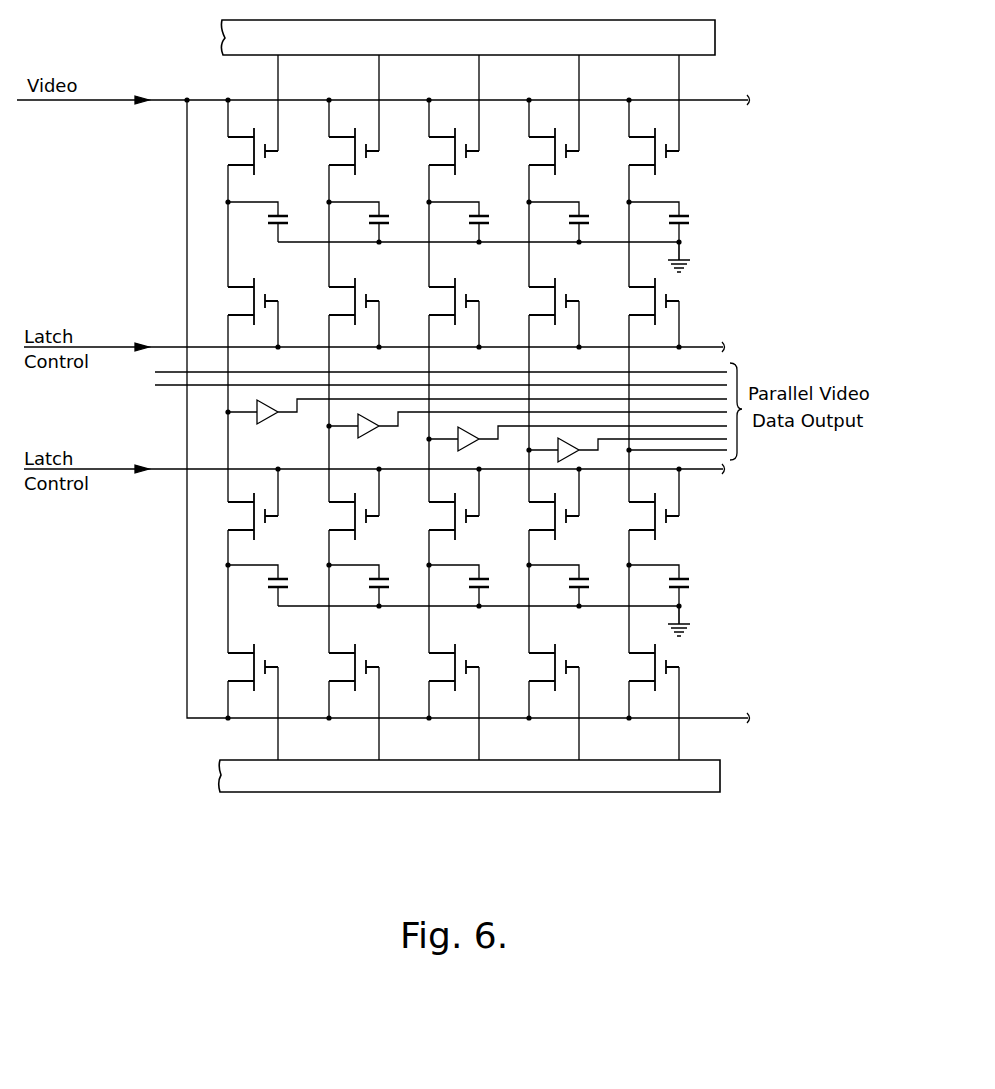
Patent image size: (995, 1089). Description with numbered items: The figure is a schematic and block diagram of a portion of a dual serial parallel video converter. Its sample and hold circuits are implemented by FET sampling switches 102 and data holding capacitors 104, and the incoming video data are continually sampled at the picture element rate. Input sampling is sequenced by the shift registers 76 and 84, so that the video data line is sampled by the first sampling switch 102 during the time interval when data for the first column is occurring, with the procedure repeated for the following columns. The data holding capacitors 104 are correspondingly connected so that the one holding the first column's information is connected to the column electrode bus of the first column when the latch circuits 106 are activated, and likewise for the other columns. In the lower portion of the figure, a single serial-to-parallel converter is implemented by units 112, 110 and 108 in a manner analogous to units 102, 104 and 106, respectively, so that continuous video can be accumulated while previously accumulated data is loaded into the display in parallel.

The shift register 84 is at (715, 37).
The shift register 76 is at (689, 783).
The FET sampling switch 102 is at (719, 171).
The data holding capacitor 104 is at (715, 242).
The latch circuit 106 is at (695, 323).
The latch circuit 108 is at (718, 520).
The data holding capacitor 110 is at (710, 583).
The FET sampling switch 112 is at (715, 672).